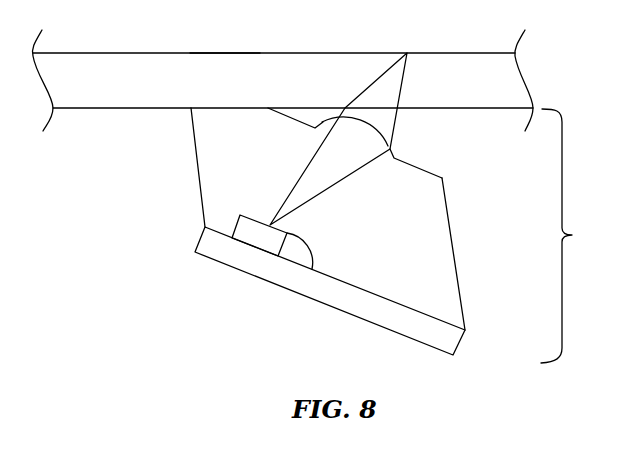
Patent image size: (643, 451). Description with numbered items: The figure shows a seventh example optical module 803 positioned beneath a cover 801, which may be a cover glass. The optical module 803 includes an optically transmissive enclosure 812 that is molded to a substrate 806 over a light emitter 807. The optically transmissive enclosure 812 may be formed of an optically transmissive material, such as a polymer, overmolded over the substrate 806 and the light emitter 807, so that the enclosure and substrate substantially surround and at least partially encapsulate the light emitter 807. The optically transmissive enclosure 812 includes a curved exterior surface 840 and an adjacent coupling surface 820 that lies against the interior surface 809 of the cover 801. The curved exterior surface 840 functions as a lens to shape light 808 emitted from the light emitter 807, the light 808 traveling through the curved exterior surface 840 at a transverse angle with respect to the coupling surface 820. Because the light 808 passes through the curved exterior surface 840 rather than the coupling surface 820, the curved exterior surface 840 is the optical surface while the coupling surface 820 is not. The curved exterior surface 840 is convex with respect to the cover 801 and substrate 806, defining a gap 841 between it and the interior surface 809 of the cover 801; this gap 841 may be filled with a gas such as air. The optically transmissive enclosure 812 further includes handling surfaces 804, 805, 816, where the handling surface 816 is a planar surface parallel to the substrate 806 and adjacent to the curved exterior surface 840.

The cover 801 is at (530, 73).
The optical module 803 is at (575, 236).
The handling surface 804 is at (198, 188).
The handling surface 805 is at (456, 243).
The substrate 806 is at (462, 345).
The light emitter 807 is at (240, 212).
The light 808 is at (358, 90).
The interior surface 809 is at (95, 109).
The optically transmissive enclosure 812 is at (183, 173).
The handling surface 816 is at (418, 168).
The coupling surface 820 is at (215, 107).
The curved exterior surface 840 is at (324, 118).
The gap 841 is at (313, 117).